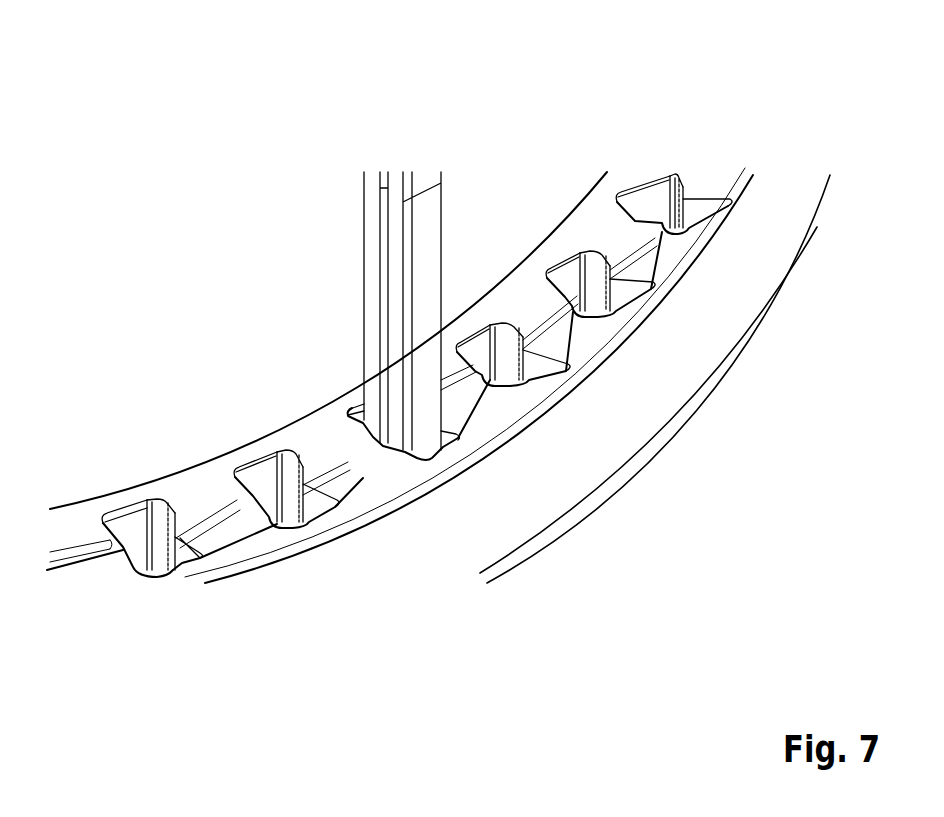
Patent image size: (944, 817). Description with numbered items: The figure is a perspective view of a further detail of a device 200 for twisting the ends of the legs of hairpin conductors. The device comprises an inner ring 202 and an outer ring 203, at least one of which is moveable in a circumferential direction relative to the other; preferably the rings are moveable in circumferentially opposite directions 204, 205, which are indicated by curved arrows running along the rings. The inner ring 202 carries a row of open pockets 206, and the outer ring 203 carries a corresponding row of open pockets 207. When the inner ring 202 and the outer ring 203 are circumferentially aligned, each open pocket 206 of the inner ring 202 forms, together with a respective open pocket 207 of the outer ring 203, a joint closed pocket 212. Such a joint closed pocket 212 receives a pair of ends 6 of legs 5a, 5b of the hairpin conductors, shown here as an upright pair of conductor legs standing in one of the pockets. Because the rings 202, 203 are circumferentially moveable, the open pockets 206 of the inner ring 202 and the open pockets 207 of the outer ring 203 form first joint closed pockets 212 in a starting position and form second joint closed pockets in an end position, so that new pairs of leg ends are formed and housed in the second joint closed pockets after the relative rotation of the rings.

The stator assembly 200 is at (215, 102).
The end 6 is at (453, 143).
The leg 5a is at (372, 246).
The leg 5b is at (398, 312).
The inner ring 202 is at (200, 487).
The outer ring 203 is at (242, 535).
The circumferential direction 204 is at (350, 330).
The circumferential direction 205 is at (407, 527).
The open pocket 206 is at (493, 342).
The open pocket 207 is at (537, 377).
The joint closed pocket 212 is at (591, 280).